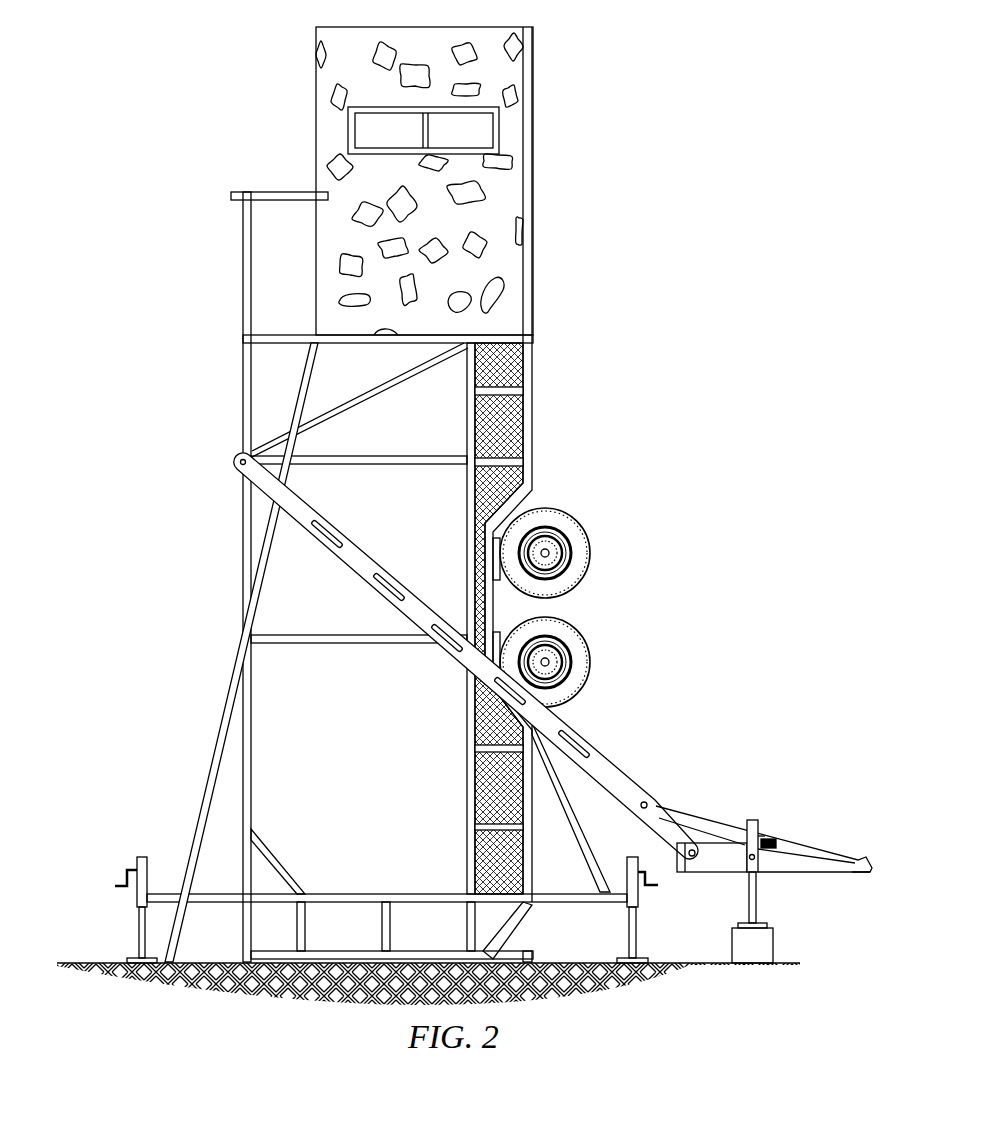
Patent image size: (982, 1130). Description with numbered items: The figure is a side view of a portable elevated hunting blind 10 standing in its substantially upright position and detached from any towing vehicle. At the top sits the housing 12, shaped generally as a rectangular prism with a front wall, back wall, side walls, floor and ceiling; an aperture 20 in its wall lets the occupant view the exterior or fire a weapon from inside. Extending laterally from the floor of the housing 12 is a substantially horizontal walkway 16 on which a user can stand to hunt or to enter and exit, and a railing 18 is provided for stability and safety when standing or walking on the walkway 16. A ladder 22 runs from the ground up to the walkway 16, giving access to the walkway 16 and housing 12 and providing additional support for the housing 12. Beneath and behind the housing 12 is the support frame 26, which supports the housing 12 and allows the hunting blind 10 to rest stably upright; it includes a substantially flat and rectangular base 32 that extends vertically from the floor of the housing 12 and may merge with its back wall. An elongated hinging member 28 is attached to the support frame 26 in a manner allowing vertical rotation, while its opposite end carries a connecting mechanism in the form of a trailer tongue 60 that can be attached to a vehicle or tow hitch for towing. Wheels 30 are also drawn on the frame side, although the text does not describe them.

The elevated hunting blind 10 is at (637, 245).
The housing 12 is at (500, 192).
The walkway 16 is at (277, 345).
The railing 18 is at (230, 196).
The aperture 20 is at (473, 130).
The ladder 22 is at (215, 755).
The support frame 26 is at (127, 340).
The hinging member 28 is at (457, 660).
The wheel 30 is at (580, 555).
The base 32 is at (532, 420).
The trailer tongue 60 is at (855, 858).